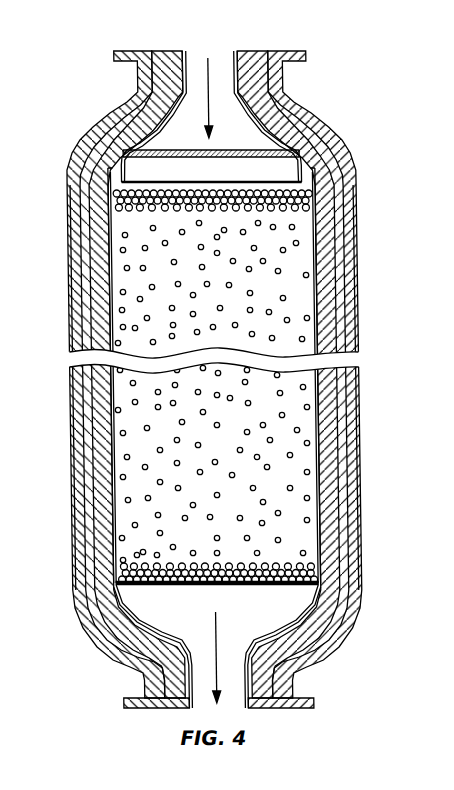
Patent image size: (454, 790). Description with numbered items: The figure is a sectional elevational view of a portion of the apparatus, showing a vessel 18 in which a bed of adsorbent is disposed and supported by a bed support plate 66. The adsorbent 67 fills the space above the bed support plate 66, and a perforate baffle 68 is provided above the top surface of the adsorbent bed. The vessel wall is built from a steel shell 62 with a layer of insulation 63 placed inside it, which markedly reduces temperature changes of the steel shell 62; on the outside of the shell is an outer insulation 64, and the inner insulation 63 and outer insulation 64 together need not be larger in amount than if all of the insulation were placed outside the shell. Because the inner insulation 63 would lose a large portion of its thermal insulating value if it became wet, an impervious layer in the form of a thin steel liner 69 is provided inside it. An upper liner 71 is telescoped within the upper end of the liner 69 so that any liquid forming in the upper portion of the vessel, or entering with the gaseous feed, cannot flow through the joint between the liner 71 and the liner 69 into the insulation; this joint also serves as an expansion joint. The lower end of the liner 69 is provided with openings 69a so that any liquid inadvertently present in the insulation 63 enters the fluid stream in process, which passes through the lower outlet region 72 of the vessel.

The reactor vessel 18 is at (238, 379).
The steel shell 62 is at (341, 231).
The layer of insulation 63 is at (323, 277).
The outer insulation 64 is at (350, 308).
The bed support plate 66 is at (189, 584).
The catalyst particles 67 is at (255, 423).
The perforate baffle 68 is at (262, 157).
The thin steel liner 69 is at (315, 337).
The openings 69a is at (328, 581).
The upper liner 71 is at (261, 131).
The outlet chamber 72 is at (291, 613).